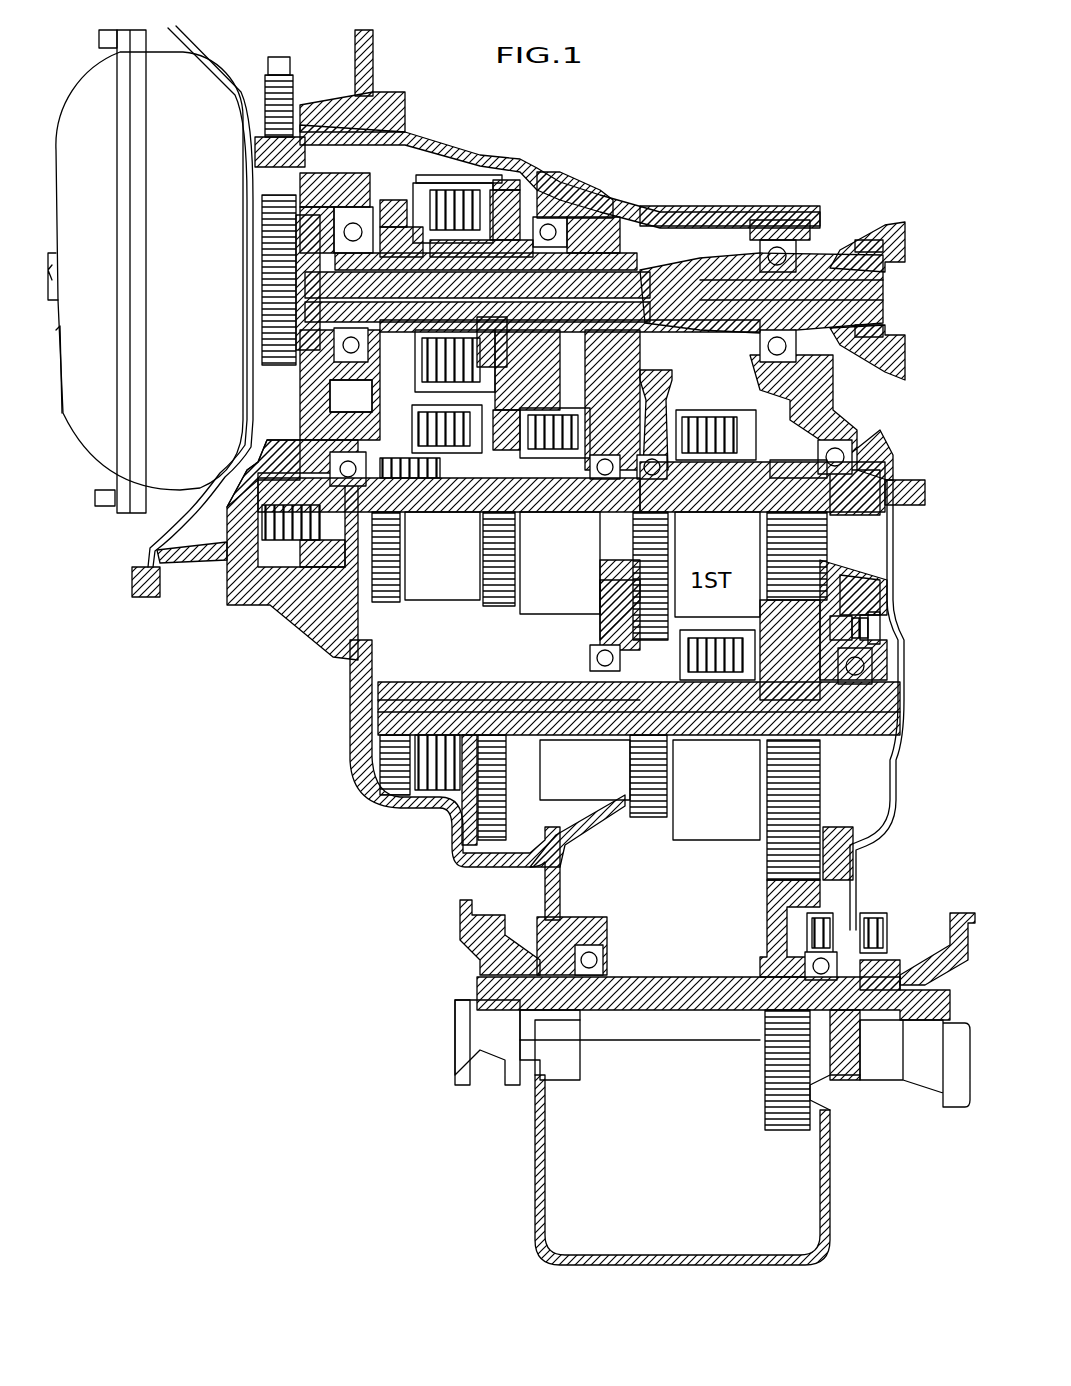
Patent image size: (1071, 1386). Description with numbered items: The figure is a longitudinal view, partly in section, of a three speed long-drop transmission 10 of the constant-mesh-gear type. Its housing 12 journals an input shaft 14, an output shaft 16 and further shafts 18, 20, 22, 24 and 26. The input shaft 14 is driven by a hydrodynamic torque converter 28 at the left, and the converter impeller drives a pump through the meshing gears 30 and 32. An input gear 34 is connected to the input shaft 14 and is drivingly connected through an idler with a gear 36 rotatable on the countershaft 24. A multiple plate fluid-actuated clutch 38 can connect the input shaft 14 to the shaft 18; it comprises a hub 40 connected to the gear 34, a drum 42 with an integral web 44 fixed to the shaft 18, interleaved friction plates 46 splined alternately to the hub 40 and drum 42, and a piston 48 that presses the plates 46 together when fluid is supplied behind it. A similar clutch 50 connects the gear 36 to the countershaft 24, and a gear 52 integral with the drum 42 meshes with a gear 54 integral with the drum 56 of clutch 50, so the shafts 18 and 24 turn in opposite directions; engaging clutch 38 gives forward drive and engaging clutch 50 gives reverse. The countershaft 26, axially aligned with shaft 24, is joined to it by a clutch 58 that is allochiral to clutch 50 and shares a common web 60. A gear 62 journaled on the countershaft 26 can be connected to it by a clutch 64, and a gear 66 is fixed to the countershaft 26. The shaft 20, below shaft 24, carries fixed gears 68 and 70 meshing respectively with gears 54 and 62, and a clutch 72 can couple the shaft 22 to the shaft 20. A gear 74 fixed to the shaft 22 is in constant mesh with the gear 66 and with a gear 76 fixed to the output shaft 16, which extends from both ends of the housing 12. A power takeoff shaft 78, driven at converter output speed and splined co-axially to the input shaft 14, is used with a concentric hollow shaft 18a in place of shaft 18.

The transmission 10 is at (195, 654).
The housing 12 is at (282, 595).
The input shaft 14 is at (280, 292).
The output shaft 16 is at (685, 975).
The shaft 18 is at (640, 277).
The hollow shaft 18a is at (618, 218).
The shaft 20 is at (378, 710).
The shaft 22 is at (700, 737).
The countershaft 24 is at (520, 480).
The countershaft 26 is at (712, 514).
The hydrodynamic torque converter 28 is at (195, 85).
The gear 30 is at (262, 232).
The gear 32 is at (283, 75).
The input gear 34 is at (392, 200).
The gear 36 is at (330, 440).
The clutch 38 is at (447, 188).
The hub 40 is at (420, 242).
The drum 42 is at (470, 195).
The web 44 is at (590, 235).
The friction plates 46 is at (430, 175).
The piston 48 is at (590, 195).
The clutch 50 is at (432, 600).
The gear 52 is at (510, 180).
The gear 54 is at (482, 600).
The drum 56 is at (415, 396).
The clutch 58 is at (545, 605).
The web 60 is at (540, 420).
The gear 62 is at (660, 370).
The clutch 64 is at (715, 408).
The gear 66 is at (800, 462).
The gear 68 is at (506, 800).
The gear 70 is at (650, 817).
The clutch 72 is at (705, 840).
The gear 74 is at (868, 605).
The output shaft gear 76 is at (775, 1130).
The power takeoff shaft 78 is at (740, 280).